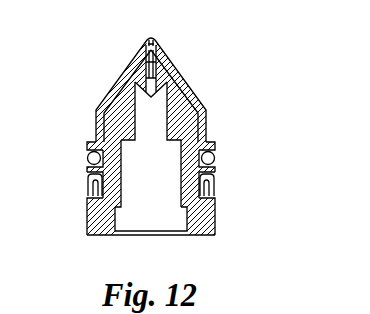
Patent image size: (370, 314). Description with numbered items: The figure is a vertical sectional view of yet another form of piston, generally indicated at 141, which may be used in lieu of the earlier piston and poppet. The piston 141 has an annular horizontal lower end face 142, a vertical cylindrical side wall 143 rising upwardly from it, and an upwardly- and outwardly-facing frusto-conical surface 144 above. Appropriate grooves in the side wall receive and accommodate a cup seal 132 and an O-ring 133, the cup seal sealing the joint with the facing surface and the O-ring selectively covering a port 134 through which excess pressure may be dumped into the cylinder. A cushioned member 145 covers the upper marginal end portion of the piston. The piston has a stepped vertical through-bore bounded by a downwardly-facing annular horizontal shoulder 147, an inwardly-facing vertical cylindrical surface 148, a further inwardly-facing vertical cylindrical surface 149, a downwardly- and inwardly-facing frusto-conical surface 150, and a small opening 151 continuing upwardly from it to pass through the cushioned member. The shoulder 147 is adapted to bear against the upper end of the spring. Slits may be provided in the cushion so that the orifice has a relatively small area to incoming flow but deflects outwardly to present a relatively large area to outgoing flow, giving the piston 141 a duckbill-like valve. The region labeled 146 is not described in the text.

The piston 141 is at (256, 136).
The cushioned member 145 is at (101, 80).
The frusto-conical surface 144 is at (196, 95).
The vertical cylindrical surface 149 is at (153, 109).
The frusto-conical surface 150 is at (169, 84).
The small opening 151 is at (136, 36).
The annular horizontal shoulder 147 is at (170, 155).
The vertical cylindrical surface 148 is at (128, 180).
The lower cavity 146 is at (118, 222).
The port 134 is at (88, 139).
The O-ring 133 is at (80, 161).
The cup seal 132 is at (79, 195).
The vertical cylindrical side wall 143 is at (224, 205).
The annular horizontal lower end face 142 is at (199, 242).